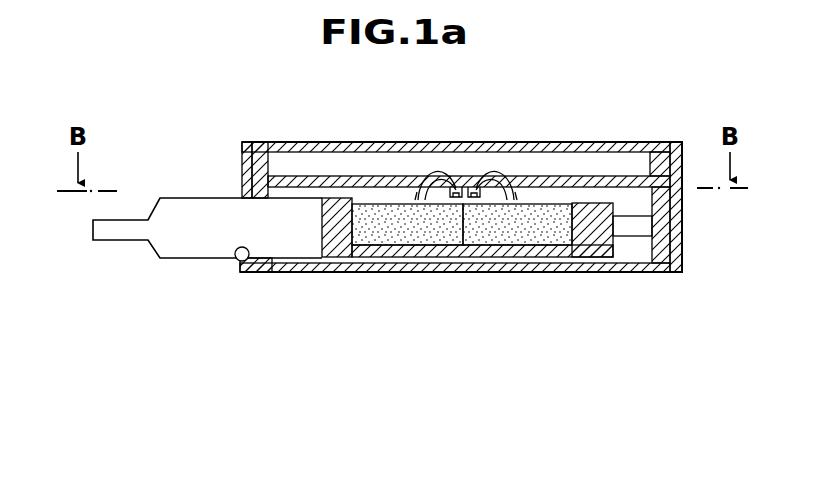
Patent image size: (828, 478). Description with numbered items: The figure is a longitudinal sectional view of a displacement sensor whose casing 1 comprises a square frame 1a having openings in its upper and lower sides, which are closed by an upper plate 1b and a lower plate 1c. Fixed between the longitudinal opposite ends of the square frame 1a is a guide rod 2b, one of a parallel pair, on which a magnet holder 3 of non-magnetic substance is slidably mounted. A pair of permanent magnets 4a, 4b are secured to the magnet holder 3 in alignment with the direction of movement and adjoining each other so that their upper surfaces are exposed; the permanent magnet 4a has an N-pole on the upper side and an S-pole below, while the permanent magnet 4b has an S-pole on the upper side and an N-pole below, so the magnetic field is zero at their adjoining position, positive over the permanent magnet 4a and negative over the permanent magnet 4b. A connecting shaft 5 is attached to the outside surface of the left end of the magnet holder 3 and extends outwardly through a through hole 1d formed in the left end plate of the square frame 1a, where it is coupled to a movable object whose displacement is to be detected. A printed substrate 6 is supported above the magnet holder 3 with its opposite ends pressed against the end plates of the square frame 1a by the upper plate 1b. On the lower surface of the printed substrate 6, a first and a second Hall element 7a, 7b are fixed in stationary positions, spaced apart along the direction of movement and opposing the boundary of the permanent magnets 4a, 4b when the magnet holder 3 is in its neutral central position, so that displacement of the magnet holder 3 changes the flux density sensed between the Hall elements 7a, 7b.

The casing 1 is at (683, 225).
The square frame 1a is at (683, 255).
The upper plate 1b is at (600, 142).
The lower plate 1c is at (575, 272).
The through hole 1d is at (232, 250).
The guide rod 2b is at (637, 230).
The magnet holder 3 is at (342, 242).
The permanent magnet 4a is at (445, 232).
The permanent magnet 4b is at (485, 230).
The connecting shaft 5 is at (177, 247).
The printed substrate 6 is at (362, 176).
The first Hall element 7a is at (474, 187).
The second Hall element 7b is at (457, 187).